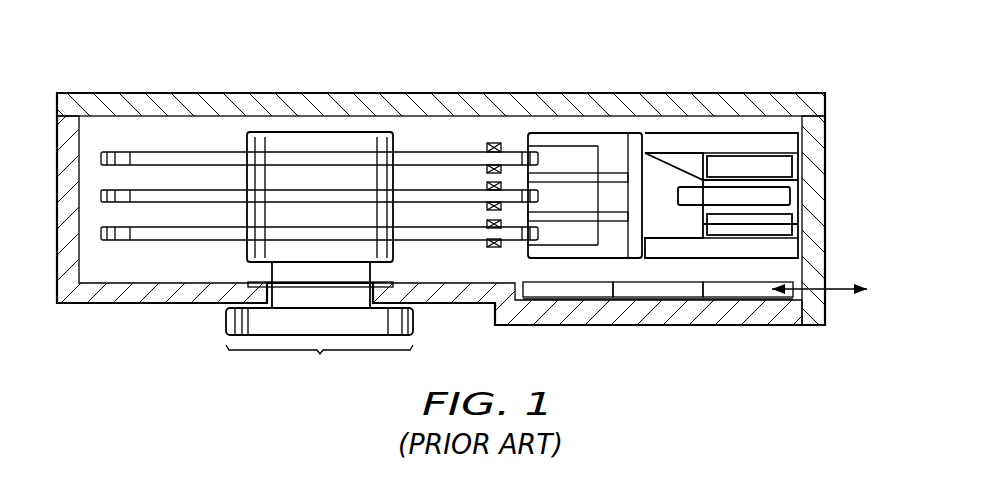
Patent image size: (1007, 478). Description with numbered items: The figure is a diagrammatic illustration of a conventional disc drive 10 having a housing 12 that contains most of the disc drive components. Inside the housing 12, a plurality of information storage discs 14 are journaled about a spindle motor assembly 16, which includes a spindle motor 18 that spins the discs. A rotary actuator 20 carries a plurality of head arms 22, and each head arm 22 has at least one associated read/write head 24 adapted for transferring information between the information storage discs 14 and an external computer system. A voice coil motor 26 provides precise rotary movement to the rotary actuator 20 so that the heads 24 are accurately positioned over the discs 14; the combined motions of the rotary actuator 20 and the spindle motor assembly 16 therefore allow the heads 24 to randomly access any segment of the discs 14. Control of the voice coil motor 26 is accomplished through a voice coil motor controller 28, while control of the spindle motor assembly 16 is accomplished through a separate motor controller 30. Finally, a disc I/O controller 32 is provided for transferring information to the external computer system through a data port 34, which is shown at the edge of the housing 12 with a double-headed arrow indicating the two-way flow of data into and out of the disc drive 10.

The disc drive 10 is at (685, 78).
The housing 12 is at (827, 148).
The information storage discs 14 is at (215, 152).
The spindle motor assembly 16 is at (319, 259).
The spindle motor 18 is at (413, 320).
The rotary actuator 20 is at (668, 207).
The head arms 22 is at (528, 252).
The read/write head 24 is at (490, 143).
The voice coil motor 26 is at (780, 193).
The voice coil motor controller 28 is at (557, 292).
The motor controller 30 is at (665, 292).
The disc I/O controller 32 is at (743, 292).
The data port 34 is at (840, 293).